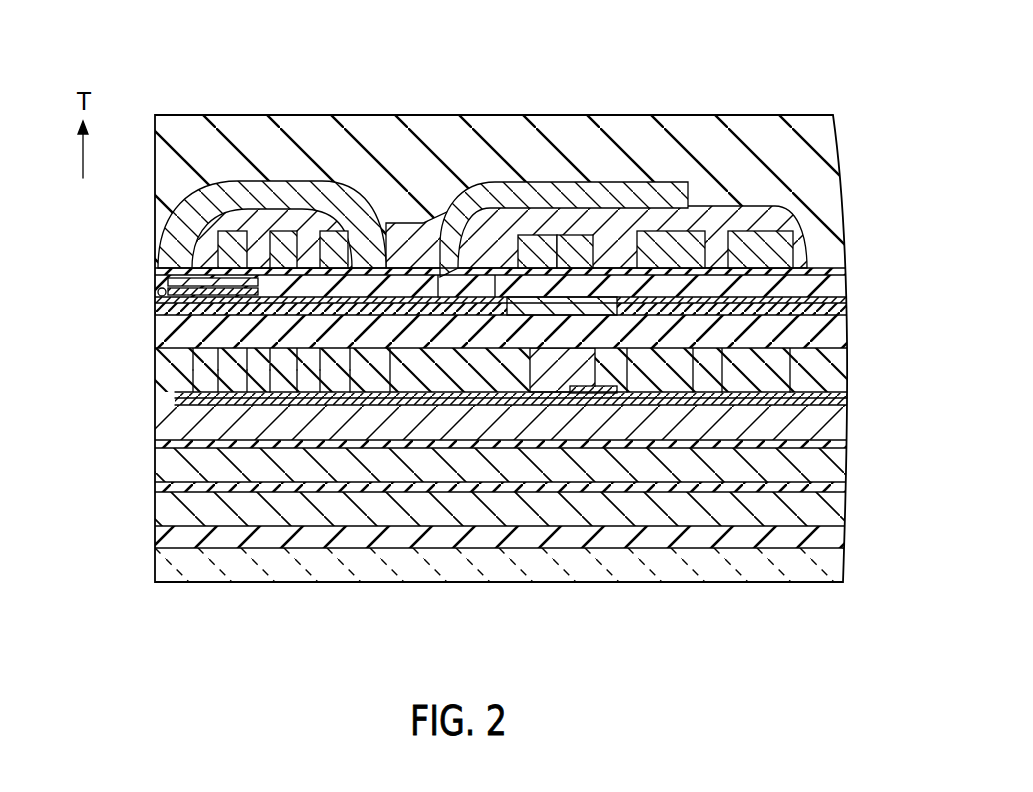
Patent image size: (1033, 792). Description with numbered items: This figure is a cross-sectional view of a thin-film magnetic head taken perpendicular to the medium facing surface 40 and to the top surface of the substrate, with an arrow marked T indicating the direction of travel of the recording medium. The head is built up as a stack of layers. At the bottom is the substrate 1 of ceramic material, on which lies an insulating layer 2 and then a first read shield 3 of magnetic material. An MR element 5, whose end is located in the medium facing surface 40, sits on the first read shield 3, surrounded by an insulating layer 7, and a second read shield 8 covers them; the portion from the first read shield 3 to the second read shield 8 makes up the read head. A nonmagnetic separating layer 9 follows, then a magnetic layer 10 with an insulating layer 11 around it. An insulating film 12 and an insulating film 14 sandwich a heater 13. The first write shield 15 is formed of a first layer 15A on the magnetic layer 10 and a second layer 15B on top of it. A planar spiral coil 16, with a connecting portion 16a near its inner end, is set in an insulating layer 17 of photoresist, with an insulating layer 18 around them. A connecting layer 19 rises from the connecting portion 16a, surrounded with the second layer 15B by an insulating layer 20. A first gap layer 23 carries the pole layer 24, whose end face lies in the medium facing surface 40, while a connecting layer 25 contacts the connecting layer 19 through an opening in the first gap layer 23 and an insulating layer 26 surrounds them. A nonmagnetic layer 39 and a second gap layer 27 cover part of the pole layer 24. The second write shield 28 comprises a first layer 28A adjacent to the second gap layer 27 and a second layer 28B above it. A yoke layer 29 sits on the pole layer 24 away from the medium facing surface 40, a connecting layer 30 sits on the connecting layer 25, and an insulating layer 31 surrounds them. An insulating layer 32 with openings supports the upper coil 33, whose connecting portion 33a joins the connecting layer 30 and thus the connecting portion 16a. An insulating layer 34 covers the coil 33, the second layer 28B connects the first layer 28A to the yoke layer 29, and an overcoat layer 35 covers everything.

The substrate 1 is at (228, 576).
The insulating layer 2 is at (276, 540).
The first read shield 3 is at (318, 520).
The MR element 5 is at (167, 488).
The insulating layer 7 is at (353, 493).
The second read shield 8 is at (392, 474).
The separating layer 9 is at (430, 445).
The magnetic layer 10 is at (482, 404).
The insulating layer 11 is at (728, 452).
The insulating film 12 is at (545, 394).
The heater 13 is at (625, 408).
The insulating film 14 is at (670, 410).
The first write shield 15 is at (181, 364).
The first layer 15A is at (160, 388).
The second layer 15B is at (160, 353).
The coil 16 is at (160, 396).
The connecting portion 16a is at (578, 393).
The insulating layer 17 is at (155, 445).
The insulating layer 18 is at (155, 474).
The connecting layer 19 is at (843, 371).
The insulating layer 20 is at (843, 336).
The first gap layer 23 is at (158, 292).
The pole layer 24 is at (165, 283).
The connecting layer 25 is at (537, 292).
The insulating layer 26 is at (843, 302).
The second gap layer 27 is at (160, 270).
The second write shield 28 is at (272, 134).
The first layer 28A is at (163, 262).
The second layer 28B is at (216, 240).
The yoke layer 29 is at (397, 230).
The connecting layer 30 is at (560, 250).
The insulating layer 31 is at (460, 286).
The insulating layer 32 is at (262, 232).
The coil 33 is at (300, 232).
The connecting portion 33a is at (582, 246).
The insulating layer 34 is at (340, 240).
The overcoat layer 35 is at (668, 122).
The nonmagnetic layer 39 is at (160, 306).
The medium facing surface 40 is at (148, 245).